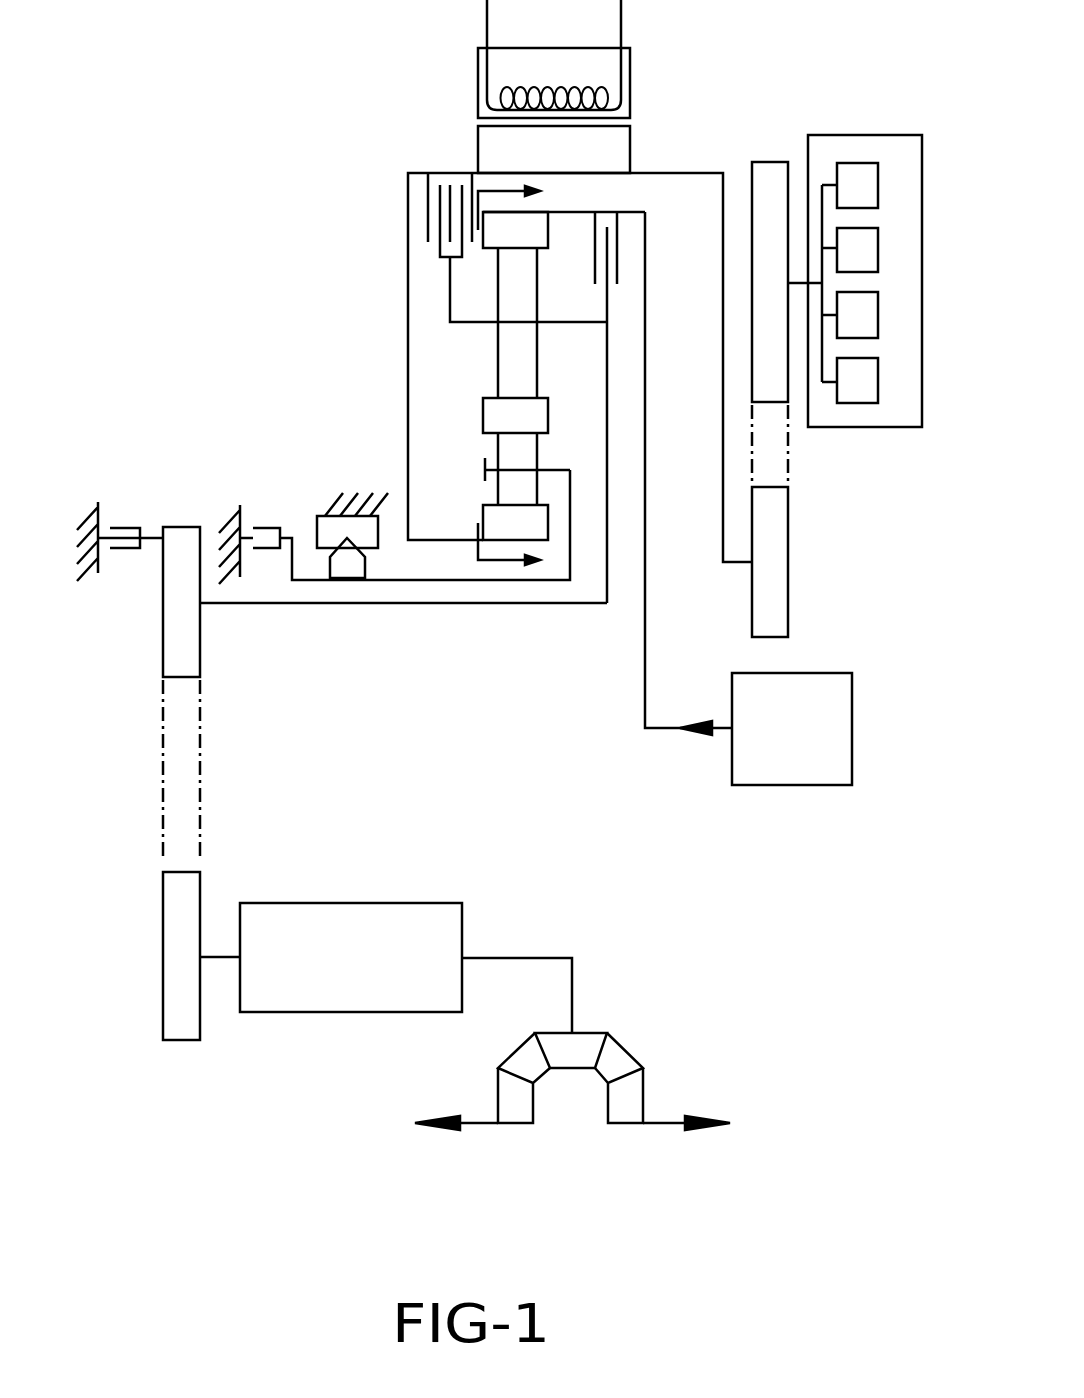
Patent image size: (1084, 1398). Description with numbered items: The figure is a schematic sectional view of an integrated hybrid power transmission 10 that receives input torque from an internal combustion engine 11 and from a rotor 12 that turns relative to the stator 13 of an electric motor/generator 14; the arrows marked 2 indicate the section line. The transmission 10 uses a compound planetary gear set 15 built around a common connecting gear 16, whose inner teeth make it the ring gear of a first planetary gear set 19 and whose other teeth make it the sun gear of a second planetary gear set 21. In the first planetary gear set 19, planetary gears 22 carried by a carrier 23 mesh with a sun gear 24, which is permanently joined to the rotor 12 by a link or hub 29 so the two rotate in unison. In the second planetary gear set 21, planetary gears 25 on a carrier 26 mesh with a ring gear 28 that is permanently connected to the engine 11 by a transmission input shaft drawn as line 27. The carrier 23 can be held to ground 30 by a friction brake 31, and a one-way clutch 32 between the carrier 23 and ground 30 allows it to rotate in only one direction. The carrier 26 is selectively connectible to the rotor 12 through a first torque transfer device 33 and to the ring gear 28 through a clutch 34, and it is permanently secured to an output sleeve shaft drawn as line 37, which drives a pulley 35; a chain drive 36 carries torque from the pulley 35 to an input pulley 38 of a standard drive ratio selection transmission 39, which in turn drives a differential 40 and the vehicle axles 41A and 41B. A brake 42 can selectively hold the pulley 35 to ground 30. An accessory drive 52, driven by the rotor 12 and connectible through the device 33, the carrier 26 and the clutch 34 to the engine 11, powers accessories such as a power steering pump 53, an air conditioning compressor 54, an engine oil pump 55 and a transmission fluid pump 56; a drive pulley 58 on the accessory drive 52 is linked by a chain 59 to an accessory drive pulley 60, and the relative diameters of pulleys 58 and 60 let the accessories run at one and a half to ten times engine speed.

The section line arrows 2 is at (519, 380).
The integrated hybrid power transmission 10 is at (288, 293).
The internal combustion engine 11 is at (792, 729).
The rotor 12 is at (630, 142).
The stator 13 is at (630, 48).
The electric motor/generator 14 is at (460, 114).
The compound planetary gear set 15 is at (575, 392).
The common connecting gear 16 is at (498, 412).
The first planetary gear set 19 is at (478, 449).
The second planetary gear set 21 is at (480, 345).
The planetary gears 22 is at (517, 445).
The carrier 23 is at (570, 463).
The sun gear 24 is at (532, 520).
The planetary gears 25 is at (520, 365).
The carrier 26 is at (580, 323).
The transmission input shaft 27 is at (648, 625).
The ring gear 28 is at (498, 240).
The link or hub 29 is at (408, 400).
The ground 30 is at (222, 530).
The friction brake 31 is at (258, 538).
The one-way clutch 32 is at (350, 570).
The first torque transfer device 33 is at (428, 210).
The clutch 34 is at (617, 253).
The pulley 35 is at (200, 620).
The chain drive 36 is at (163, 793).
The output sleeve shaft 37 is at (450, 612).
The input pulley 38 is at (163, 905).
The drive ratio selection transmission 39 is at (351, 957).
The differential 40 is at (624, 1054).
The axle 41A is at (485, 1125).
The axle 41B is at (663, 1125).
The brake 42 is at (118, 538).
The accessory drive 52 is at (808, 116).
The power steering pump 53 is at (857, 185).
The air conditioning compressor 54 is at (857, 250).
The engine oil pump 55 is at (857, 315).
The transmission fluid pump 56 is at (857, 380).
The drive pulley 58 is at (772, 160).
The chain 59 is at (785, 472).
The accessory drive pulley 60 is at (790, 530).